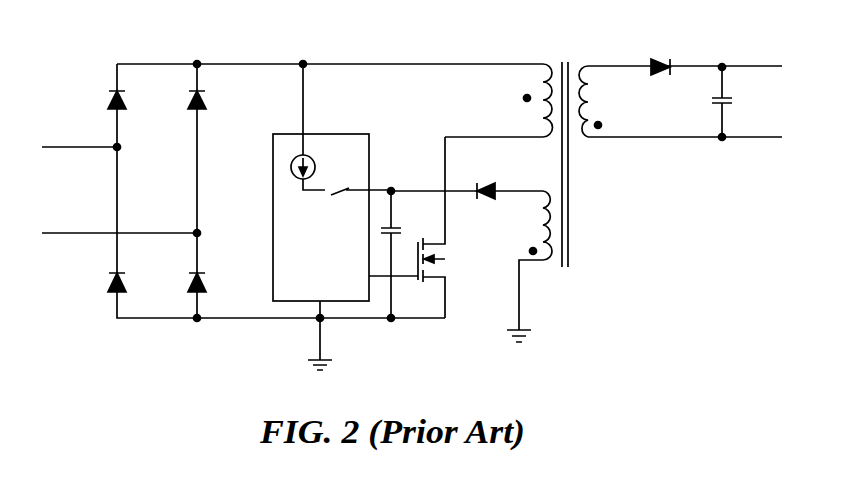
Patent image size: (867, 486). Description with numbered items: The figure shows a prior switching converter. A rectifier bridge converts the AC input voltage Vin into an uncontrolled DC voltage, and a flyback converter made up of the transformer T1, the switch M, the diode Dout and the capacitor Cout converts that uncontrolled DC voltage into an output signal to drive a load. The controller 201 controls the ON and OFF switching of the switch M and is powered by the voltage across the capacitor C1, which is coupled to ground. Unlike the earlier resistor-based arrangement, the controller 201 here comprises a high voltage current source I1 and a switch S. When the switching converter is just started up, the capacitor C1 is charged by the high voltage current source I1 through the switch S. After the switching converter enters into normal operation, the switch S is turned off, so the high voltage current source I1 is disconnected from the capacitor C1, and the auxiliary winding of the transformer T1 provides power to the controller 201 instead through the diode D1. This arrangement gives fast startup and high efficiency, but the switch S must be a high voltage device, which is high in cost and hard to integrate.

The controller 201 is at (273, 229).
The AC input voltage Vin is at (119, 190).
The high voltage current source I1 is at (310, 121).
The switch S is at (347, 182).
The capacitor C1 is at (402, 254).
The switch M is at (442, 227).
The diode D1 is at (467, 204).
The transformer T1 is at (523, 187).
The diode Dout is at (664, 55).
The capacitor Cout is at (738, 102).